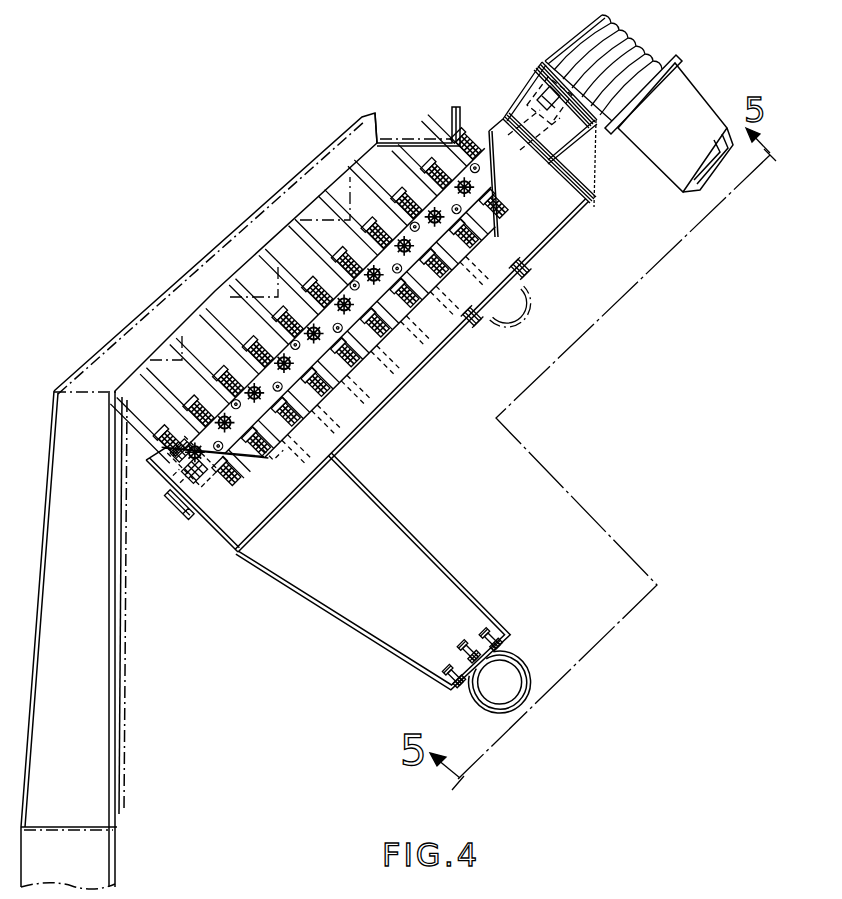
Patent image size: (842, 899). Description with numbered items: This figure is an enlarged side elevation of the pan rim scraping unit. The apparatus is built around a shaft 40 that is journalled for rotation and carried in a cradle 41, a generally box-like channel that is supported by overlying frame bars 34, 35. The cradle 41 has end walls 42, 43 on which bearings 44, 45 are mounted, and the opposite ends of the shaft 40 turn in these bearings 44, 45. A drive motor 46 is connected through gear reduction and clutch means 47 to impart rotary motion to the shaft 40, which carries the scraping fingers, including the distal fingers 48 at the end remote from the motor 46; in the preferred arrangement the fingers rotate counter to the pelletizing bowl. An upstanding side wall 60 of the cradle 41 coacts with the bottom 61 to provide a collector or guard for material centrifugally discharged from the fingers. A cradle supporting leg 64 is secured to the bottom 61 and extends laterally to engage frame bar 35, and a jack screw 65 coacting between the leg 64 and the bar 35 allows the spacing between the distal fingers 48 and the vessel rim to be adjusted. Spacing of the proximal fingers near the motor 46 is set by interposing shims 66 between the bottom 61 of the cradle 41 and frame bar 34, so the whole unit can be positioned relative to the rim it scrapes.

The frame bar 34 is at (527, 307).
The frame bar 35 is at (520, 673).
The shaft 40 is at (502, 168).
The cradle 41 is at (573, 203).
The end wall 42 is at (176, 490).
The end wall 43 is at (572, 173).
The bearing 44 is at (173, 447).
The bearing 45 is at (498, 140).
The drive motor 46 is at (692, 93).
The gear reduction and clutch means 47 is at (550, 46).
The distal fingers 48 is at (353, 170).
The side wall 60 is at (370, 410).
The bottom 61 is at (440, 358).
The cradle supporting leg 64 is at (457, 573).
The jack screw 65 is at (463, 636).
The shims 66 is at (532, 273).